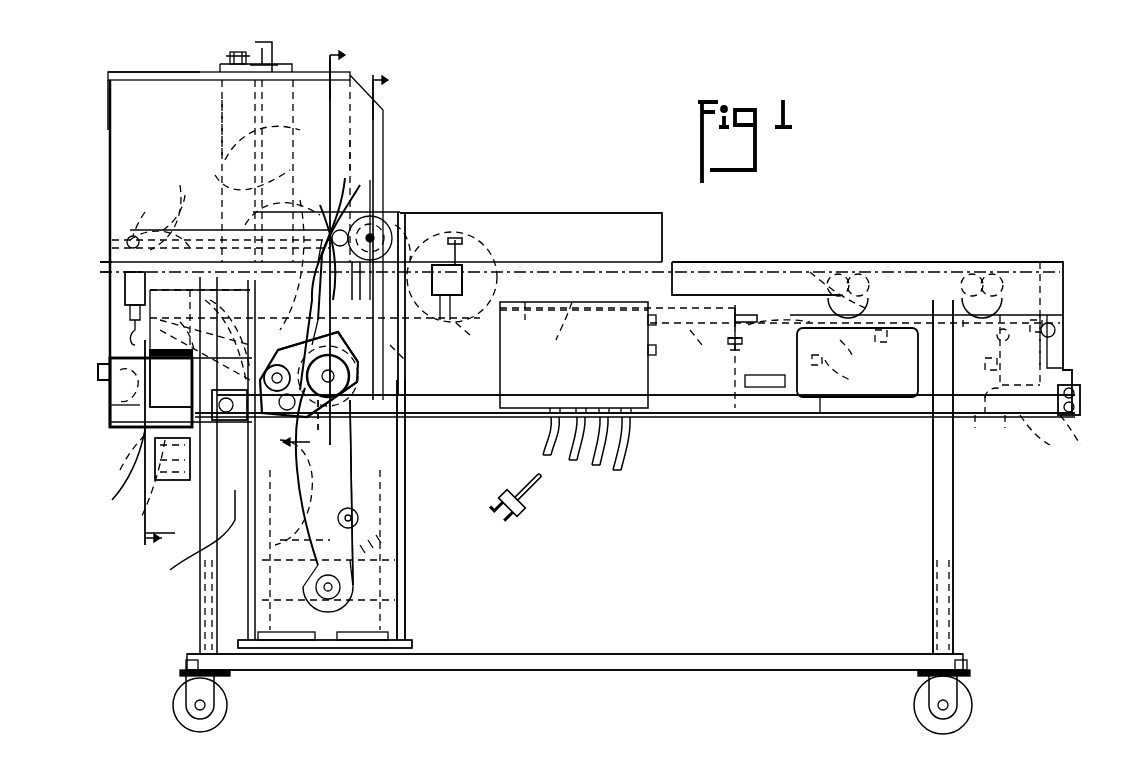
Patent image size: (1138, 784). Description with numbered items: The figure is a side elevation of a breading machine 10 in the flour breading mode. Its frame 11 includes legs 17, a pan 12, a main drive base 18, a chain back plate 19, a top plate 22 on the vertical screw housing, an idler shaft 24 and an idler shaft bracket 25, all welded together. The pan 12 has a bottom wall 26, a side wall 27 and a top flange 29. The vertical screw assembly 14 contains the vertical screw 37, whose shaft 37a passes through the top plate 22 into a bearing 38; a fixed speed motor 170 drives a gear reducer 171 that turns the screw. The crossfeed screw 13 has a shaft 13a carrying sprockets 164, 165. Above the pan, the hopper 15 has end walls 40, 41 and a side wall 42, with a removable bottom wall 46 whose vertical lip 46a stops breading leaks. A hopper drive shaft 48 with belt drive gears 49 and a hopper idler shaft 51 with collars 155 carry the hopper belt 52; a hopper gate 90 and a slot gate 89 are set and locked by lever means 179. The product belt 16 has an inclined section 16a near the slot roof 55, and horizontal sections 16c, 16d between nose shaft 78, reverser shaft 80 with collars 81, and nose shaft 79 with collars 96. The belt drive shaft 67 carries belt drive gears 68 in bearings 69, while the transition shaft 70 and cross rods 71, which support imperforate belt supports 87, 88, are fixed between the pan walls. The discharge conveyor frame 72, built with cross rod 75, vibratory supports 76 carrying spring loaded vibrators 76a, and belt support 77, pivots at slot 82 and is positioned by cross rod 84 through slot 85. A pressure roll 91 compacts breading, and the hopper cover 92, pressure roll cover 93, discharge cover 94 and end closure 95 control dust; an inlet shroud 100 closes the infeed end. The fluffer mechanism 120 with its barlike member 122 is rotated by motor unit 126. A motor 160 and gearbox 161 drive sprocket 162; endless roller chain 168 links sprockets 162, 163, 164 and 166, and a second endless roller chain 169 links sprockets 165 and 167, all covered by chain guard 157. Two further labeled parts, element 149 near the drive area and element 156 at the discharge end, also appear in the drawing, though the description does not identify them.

The breading machine 10 is at (765, 670).
The frame 11 is at (787, 654).
The pan 12 is at (712, 419).
The crossfeed screw 13 is at (372, 406).
The crossfeed screw shaft 13a is at (334, 418).
The vertical screw assembly 14 is at (215, 122).
The hopper 15 is at (104, 103).
The product belt 16 is at (780, 367).
The inclined section of product belt 16a is at (200, 312).
The horizontal section of product belt 16c is at (853, 353).
The horizontal section of product belt 16d is at (1008, 392).
The legs 17 is at (953, 522).
The main drive base 18 is at (406, 650).
The chain back plate 19 is at (405, 530).
The top plate 22 is at (280, 64).
The idler shaft 24 is at (229, 400).
The idler shaft bracket 25 is at (226, 340).
The bottom wall of pan 26 is at (766, 420).
The side wall of pan 27 is at (838, 408).
The top flange of pan 29 is at (762, 277).
The vertical screw 37 is at (322, 240).
The vertical screw shaft 37a is at (258, 42).
The bearing 38 is at (228, 55).
The end wall of hopper 40 is at (108, 128).
The end wall of hopper 41 is at (352, 143).
The side wall of hopper 42 is at (126, 156).
The removable bottom wall 46 is at (100, 268).
The vertical lip 46a is at (100, 262).
The hopper drive shaft 48 is at (378, 218).
The belt drive gears 49 is at (400, 230).
The hopper idler shaft 51 is at (150, 213).
The hopper belt 52 is at (181, 201).
The slot roof 55 is at (189, 327).
The belt drive shaft 67 is at (116, 460).
The belt drive gears 68 is at (108, 412).
The bearings 69 is at (108, 393).
The transition shaft 70 is at (302, 348).
The cross rods 71 is at (549, 337).
The discharge conveyor frame 72 is at (730, 385).
The cross rod 75 is at (1013, 350).
The vibratory supports 76 is at (874, 387).
The spring loaded vibrators 76a is at (812, 272).
The belt support 77 is at (1088, 444).
The nose shaft 78 is at (971, 330).
The nose shaft 79 is at (1080, 402).
The reverser shaft 80 is at (857, 362).
The collars 81 is at (842, 382).
The slot 82 is at (740, 318).
The cross rod 84 is at (716, 358).
The slot 85 is at (762, 371).
The imperforate belt support 87 is at (417, 359).
The imperforate belt support 88 is at (578, 386).
The slot gate 89 is at (324, 486).
The hopper gate 90 is at (320, 250).
The pressure roll 91 is at (476, 255).
The hopper cover 92 is at (165, 72).
The pressure roll cover 93 is at (559, 213).
The discharge cover 94 is at (788, 262).
The end closure 95 is at (1063, 328).
The collars 96 is at (882, 336).
The inlet shroud 100 is at (110, 426).
The fluffer mechanism 120 is at (112, 500).
The elongated barlike member 122 is at (171, 365).
The motor unit 126 is at (132, 485).
The shaft 149 is at (371, 281).
The collars 155 is at (221, 244).
The roller 156 is at (868, 290).
The chain guard 157 is at (405, 506).
The motor 160 is at (365, 577).
The gearbox 161 is at (350, 617).
The roller chain sprocket 162 is at (358, 530).
The sprocket 163 is at (440, 262).
The sprocket 164 is at (374, 399).
The sprocket 165 is at (359, 364).
The sprocket 166 is at (585, 310).
The sprocket 167 is at (120, 358).
The endless roller chain 168 is at (357, 492).
The second endless roller chain 169 is at (168, 484).
The fixed speed motor 170 is at (311, 492).
The gear reducer 171 is at (184, 539).
The lever means 179 is at (342, 230).